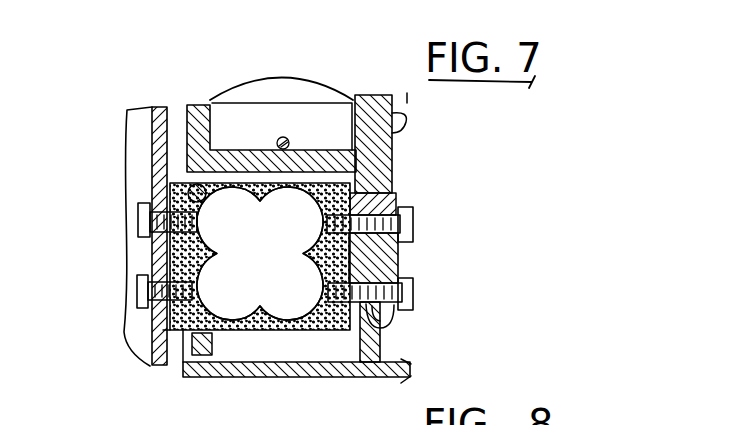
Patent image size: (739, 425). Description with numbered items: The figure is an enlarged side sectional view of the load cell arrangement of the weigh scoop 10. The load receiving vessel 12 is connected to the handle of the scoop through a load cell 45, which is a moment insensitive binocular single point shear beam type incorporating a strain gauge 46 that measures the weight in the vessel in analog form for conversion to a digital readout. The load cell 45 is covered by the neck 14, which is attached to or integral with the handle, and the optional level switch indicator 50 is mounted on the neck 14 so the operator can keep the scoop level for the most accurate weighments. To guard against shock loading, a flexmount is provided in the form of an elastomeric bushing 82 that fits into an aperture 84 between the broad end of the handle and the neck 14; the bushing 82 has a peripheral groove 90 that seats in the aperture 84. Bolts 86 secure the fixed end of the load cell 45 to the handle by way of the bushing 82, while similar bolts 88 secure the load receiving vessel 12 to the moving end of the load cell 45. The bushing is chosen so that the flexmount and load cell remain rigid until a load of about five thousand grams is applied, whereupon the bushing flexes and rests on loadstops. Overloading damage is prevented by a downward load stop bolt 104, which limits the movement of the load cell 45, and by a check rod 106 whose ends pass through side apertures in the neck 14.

The weigh scoop 10 is at (280, 393).
The load receiving vessel 12 is at (133, 322).
The neck 14 is at (192, 107).
The load cell 45 is at (260, 320).
The strain gauge 46 is at (260, 253).
The level switch indicator 50 is at (275, 78).
The elastomeric bushing 82 is at (398, 260).
The aperture 84 is at (393, 328).
The bolts 86 is at (413, 226).
The bolts 88 is at (140, 220).
The peripheral groove 90 is at (373, 199).
The downward load stop bolt 104 is at (190, 355).
The check rod 106 is at (196, 190).